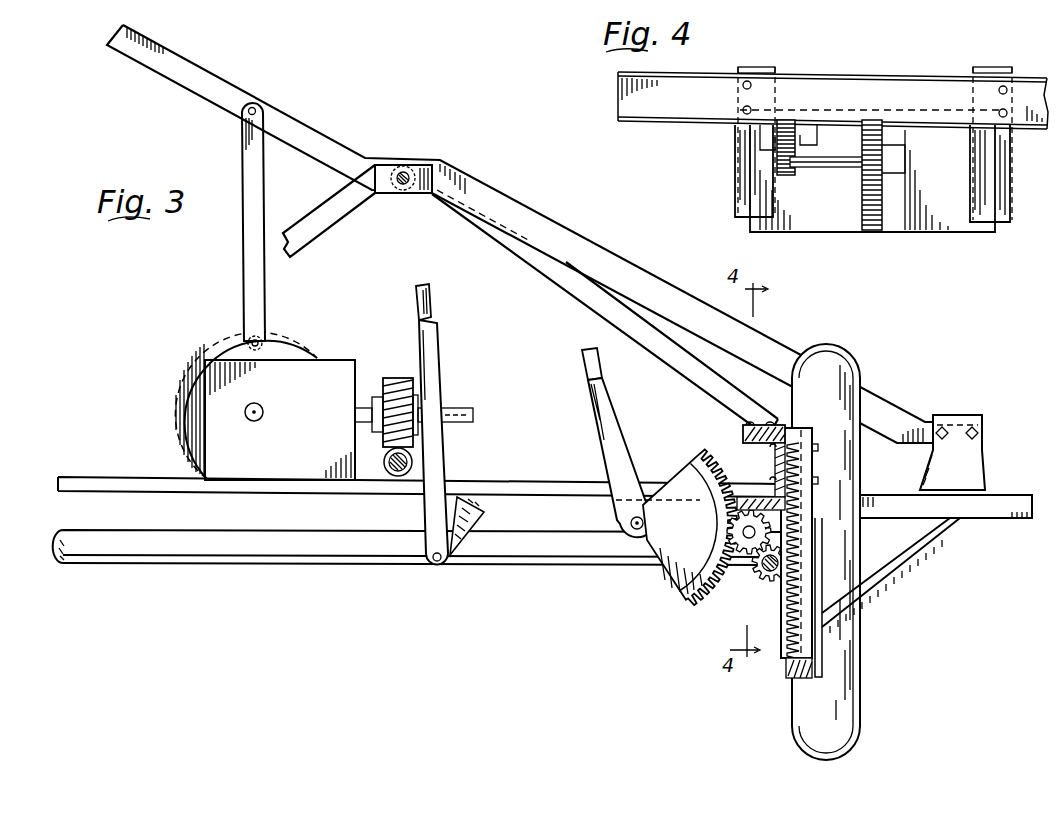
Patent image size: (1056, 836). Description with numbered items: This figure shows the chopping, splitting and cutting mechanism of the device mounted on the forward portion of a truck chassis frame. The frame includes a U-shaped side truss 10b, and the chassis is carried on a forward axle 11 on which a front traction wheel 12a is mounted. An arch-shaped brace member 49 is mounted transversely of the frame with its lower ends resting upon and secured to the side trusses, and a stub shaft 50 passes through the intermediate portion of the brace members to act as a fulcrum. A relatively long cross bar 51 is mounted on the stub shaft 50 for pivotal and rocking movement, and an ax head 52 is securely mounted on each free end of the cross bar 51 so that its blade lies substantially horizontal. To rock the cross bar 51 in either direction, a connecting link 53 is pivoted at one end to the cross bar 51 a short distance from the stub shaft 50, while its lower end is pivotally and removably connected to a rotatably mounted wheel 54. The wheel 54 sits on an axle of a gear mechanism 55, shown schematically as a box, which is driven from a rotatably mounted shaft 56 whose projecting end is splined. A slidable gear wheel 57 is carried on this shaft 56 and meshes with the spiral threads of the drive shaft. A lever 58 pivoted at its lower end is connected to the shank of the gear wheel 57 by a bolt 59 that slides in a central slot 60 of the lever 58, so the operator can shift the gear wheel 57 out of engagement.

In FIG. 4, the side truss 10b is at (677, 108).
In FIG. 3, the forward axle 11 is at (253, 545).
In FIG. 3, the front traction wheel 12a is at (838, 713).
In FIG. 3, the arch-shaped brace member 49 is at (560, 283).
In FIG. 3, the stub shaft 50 is at (403, 170).
In FIG. 3, the cross bar 51 is at (506, 197).
In FIG. 3, the ax head 52 is at (970, 463).
In FIG. 3, the connecting link 53 is at (250, 212).
In FIG. 3, the wheel 54 is at (277, 343).
In FIG. 3, the gear mechanism 55 is at (283, 377).
In FIG. 3, the shaft 56 is at (363, 406).
In FIG. 3, the slidable gear wheel 57 is at (393, 392).
In FIG. 3, the lever 58 is at (432, 358).
In FIG. 3, the bolt 59 is at (438, 403).
In FIG. 3, the central slot 60 is at (440, 432).